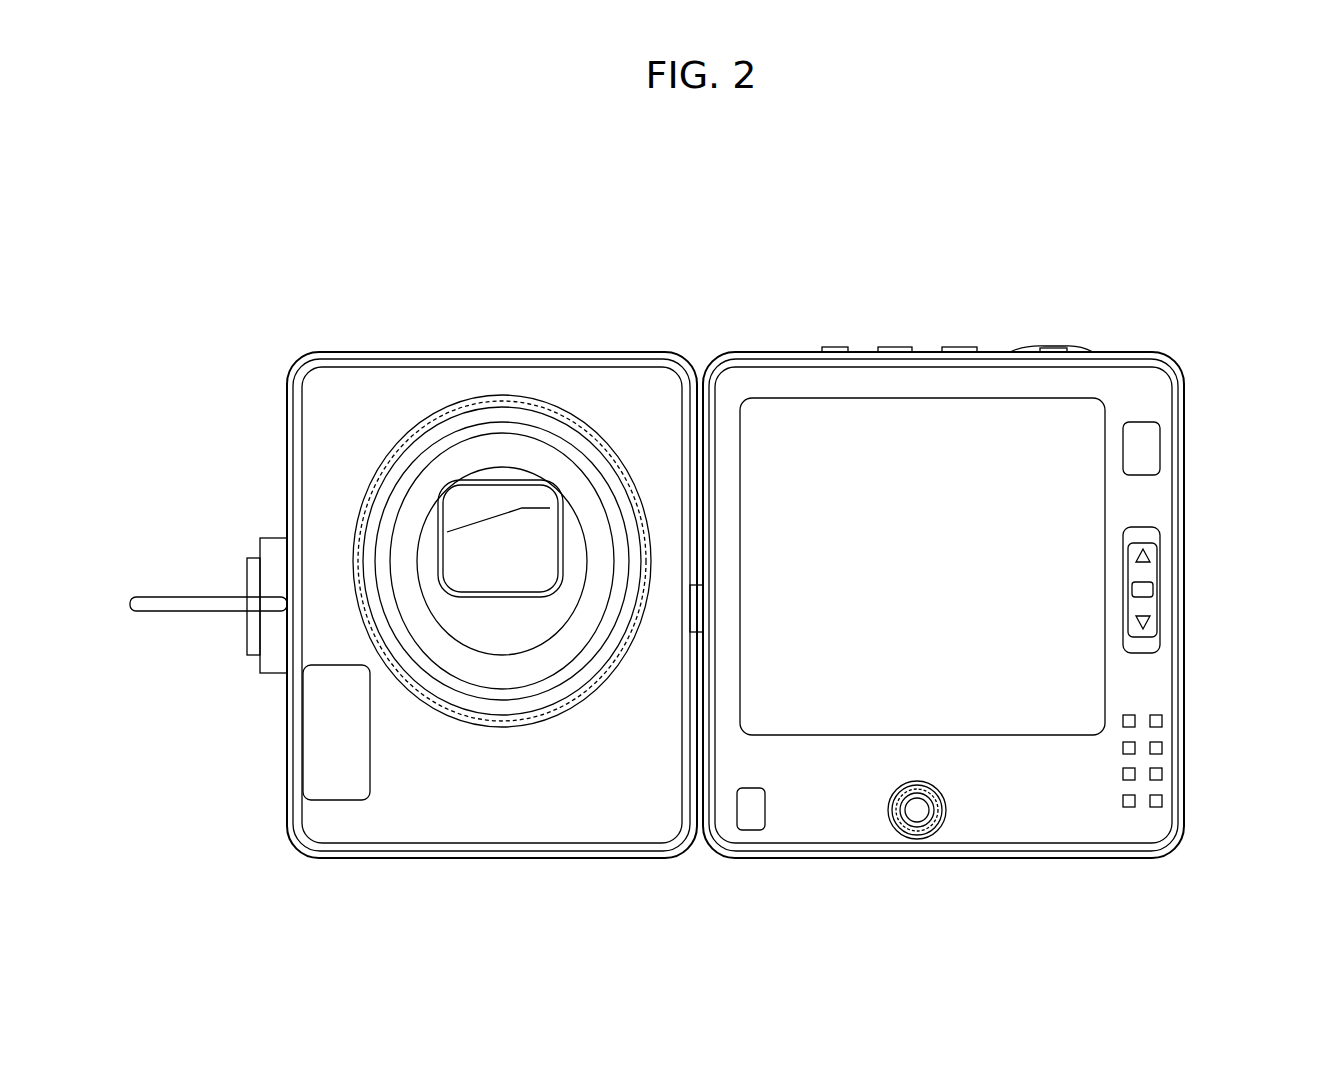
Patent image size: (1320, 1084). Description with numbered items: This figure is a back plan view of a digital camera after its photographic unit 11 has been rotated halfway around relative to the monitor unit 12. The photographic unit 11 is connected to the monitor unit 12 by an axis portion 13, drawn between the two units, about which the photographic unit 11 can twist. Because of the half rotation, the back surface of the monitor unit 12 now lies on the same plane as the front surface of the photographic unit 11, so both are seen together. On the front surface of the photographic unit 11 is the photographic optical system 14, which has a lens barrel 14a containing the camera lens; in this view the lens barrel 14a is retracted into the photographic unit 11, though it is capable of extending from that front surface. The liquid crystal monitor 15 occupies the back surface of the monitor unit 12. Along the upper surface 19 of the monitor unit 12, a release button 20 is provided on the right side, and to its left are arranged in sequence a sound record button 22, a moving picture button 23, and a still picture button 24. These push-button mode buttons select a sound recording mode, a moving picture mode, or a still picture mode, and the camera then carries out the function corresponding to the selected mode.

The photographic unit 11 is at (568, 332).
The monitor unit 12 is at (1015, 330).
The axis portion 13 is at (697, 607).
The photographic optical system 14 is at (472, 455).
The lens barrel 14a is at (410, 460).
The liquid crystal monitor 15 is at (1080, 513).
The upper surface 19 is at (1128, 352).
The release button 20 is at (1060, 347).
The sound record button 22 is at (960, 347).
The moving picture button 23 is at (896, 347).
The still picture button 24 is at (838, 347).